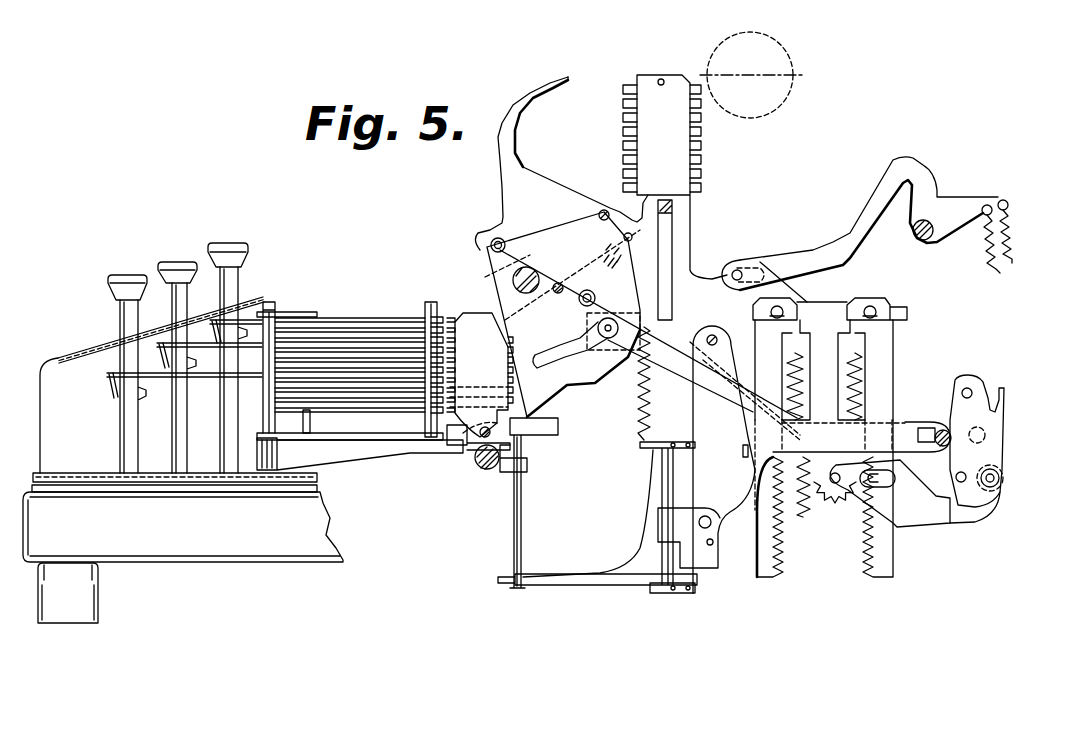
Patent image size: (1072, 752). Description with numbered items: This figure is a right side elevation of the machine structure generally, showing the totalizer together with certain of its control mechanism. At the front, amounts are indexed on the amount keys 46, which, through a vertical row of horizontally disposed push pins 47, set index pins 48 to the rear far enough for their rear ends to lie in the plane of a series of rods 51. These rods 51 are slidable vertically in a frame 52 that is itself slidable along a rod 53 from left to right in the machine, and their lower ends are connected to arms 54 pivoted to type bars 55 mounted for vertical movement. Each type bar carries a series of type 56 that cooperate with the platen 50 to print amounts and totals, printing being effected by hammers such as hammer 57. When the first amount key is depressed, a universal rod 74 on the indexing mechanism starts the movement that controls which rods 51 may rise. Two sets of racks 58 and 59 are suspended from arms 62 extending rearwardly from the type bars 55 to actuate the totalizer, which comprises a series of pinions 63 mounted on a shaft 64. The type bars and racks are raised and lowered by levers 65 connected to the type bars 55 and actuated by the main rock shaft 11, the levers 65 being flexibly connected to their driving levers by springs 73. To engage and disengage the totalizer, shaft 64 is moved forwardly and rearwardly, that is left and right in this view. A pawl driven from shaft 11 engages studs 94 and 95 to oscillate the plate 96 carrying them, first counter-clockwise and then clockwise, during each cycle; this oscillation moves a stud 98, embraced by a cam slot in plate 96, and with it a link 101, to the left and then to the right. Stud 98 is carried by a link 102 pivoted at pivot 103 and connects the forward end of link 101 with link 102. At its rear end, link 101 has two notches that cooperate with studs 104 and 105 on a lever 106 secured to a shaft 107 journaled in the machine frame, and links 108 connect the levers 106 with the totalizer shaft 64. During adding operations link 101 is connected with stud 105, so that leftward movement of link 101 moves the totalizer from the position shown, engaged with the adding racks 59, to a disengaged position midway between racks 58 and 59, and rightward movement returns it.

The main rock shaft 11 is at (480, 468).
The amount keys 46 is at (213, 250).
The push pins 47 is at (373, 309).
The index pins 48 is at (498, 397).
The platen 50 is at (770, 52).
The rods 51 is at (522, 502).
The frame 52 is at (505, 470).
The rod 53 is at (480, 445).
The arms 54 is at (582, 572).
The type bars 55 is at (690, 215).
The type 56 is at (624, 160).
The hammer 57 is at (499, 158).
The racks 58 is at (757, 562).
The adding racks 59 is at (885, 562).
The arms 62 is at (826, 307).
The pinions 63 is at (820, 503).
The totalizer shaft 64 is at (835, 485).
The levers 65 is at (867, 205).
The springs 73 is at (1018, 255).
The universal rod 74 is at (312, 424).
The stud 94 is at (585, 308).
The stud 95 is at (492, 250).
The plate 96 is at (539, 341).
The stud 98 is at (603, 340).
The link 101 is at (706, 390).
The link 102 is at (625, 288).
The pivot 103 is at (603, 210).
The stud 104 is at (972, 390).
The stud 105 is at (961, 482).
The lever 106 is at (1000, 455).
The shaft 107 is at (985, 435).
The links 108 is at (980, 518).